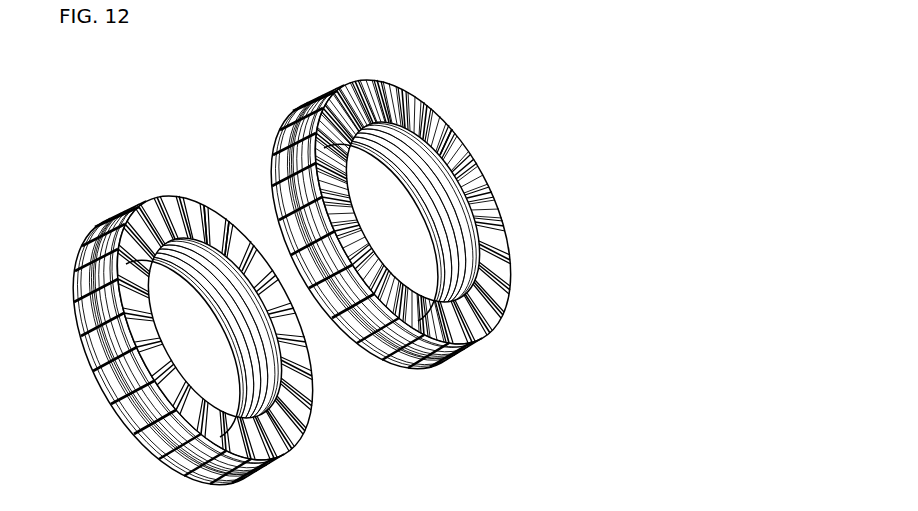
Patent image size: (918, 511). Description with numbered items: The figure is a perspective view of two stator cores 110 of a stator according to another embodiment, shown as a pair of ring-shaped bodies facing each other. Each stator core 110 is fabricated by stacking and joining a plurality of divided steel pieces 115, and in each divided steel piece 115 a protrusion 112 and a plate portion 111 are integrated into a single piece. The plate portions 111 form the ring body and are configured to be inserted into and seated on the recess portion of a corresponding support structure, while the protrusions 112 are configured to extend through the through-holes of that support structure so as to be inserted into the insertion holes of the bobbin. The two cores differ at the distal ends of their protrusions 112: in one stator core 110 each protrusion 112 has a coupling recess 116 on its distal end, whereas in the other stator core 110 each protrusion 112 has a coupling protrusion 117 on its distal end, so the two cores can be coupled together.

The stator core 110 is at (348, 270).
The plate portion 111 is at (130, 223).
The protrusion 112 is at (172, 199).
The divided steel piece 115 is at (348, 270).
The coupling recess 116 is at (210, 210).
The coupling protrusion 117 is at (427, 157).